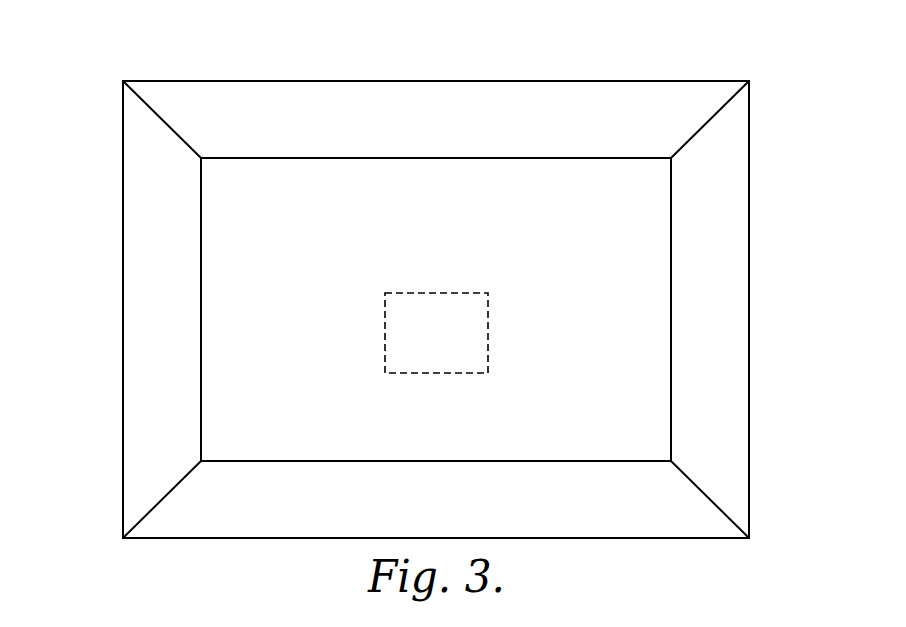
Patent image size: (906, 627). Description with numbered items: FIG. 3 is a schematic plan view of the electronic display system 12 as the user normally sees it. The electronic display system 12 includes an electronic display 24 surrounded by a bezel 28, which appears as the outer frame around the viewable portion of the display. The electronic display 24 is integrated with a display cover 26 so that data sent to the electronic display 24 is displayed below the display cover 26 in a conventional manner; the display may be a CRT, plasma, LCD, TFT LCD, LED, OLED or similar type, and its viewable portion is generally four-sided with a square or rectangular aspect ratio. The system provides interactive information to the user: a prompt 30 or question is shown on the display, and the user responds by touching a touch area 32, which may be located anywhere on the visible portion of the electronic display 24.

The electronic display system 12 is at (388, 67).
The electronic display 24 is at (122, 232).
The display cover 26 is at (210, 380).
The bezel 28 is at (737, 298).
The prompt 30 is at (323, 342).
The touch area 32 is at (447, 373).